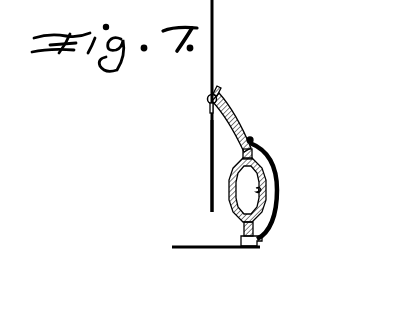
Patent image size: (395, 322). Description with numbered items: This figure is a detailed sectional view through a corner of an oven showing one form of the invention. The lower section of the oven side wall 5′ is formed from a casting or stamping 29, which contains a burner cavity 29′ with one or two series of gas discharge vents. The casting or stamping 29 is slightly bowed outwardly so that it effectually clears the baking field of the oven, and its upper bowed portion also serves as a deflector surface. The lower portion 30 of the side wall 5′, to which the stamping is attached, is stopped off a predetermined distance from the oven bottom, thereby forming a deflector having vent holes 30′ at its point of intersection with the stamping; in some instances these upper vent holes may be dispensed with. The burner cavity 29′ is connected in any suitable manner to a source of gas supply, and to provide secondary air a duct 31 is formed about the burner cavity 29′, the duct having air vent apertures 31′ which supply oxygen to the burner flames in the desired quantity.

The side wall 5′ is at (216, 58).
The casting or stamping 29 is at (236, 113).
The burner cavity 29′ is at (263, 191).
The lower portion of the side wall 30 is at (209, 146).
The vent holes 30′ is at (209, 112).
The duct 31 is at (263, 160).
The air vent apertures 31′ is at (246, 154).